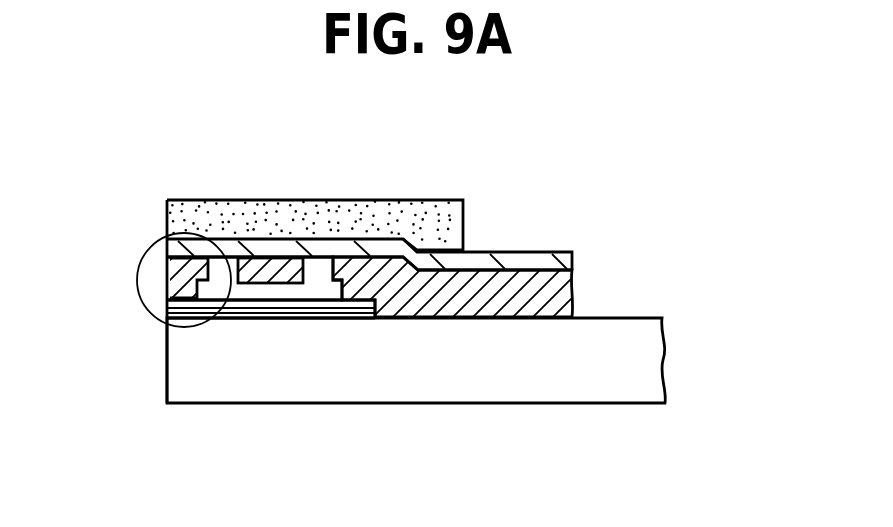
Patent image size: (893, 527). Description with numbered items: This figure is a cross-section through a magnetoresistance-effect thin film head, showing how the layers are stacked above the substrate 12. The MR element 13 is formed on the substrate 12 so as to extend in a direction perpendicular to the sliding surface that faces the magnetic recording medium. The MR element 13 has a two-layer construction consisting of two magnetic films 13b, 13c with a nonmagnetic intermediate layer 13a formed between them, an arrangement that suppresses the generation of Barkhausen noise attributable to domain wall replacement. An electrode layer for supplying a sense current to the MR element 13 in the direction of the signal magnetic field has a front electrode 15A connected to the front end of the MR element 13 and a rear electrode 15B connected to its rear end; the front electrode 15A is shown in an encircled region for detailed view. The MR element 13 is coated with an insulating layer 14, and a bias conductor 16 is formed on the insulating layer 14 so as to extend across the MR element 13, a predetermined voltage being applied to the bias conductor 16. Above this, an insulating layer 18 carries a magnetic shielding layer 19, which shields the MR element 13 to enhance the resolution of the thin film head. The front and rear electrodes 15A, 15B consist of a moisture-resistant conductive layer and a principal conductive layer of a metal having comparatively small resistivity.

The substrate 12 is at (642, 372).
The MR element 13 is at (286, 402).
The nonmagnetic intermediate layer 13a is at (302, 308).
The magnetic film 13b is at (334, 308).
The magnetic film 13c is at (253, 313).
The insulating layer 14 is at (284, 297).
The front electrode 15A is at (168, 280).
The rear electrode 15B is at (528, 285).
The bias conductor 16 is at (326, 284).
The insulating layer 18 is at (270, 248).
The magnetic shielding layer 19 is at (215, 210).